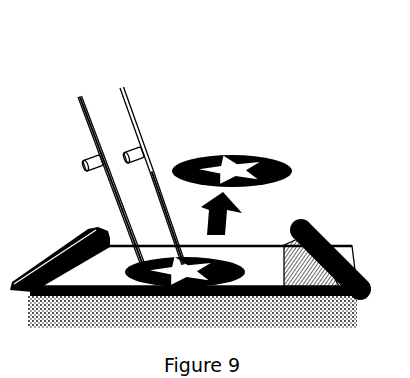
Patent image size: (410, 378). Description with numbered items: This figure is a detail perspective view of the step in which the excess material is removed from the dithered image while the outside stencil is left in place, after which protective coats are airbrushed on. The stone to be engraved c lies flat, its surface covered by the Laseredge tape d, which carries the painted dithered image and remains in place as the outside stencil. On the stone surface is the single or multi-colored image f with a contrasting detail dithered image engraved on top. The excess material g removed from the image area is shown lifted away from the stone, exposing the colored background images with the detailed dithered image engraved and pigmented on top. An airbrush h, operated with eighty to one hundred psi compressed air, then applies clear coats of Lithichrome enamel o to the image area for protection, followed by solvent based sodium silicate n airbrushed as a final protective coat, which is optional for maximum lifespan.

The airbrush h is at (122, 86).
The clear coats of Lithichrome enamel o is at (160, 197).
The excess material removed from image area g is at (238, 153).
The Laseredge tape d is at (82, 242).
The solvent based sodium silicate n is at (113, 200).
The single or multi-colored image with dithered image f is at (223, 262).
The stone c is at (362, 283).